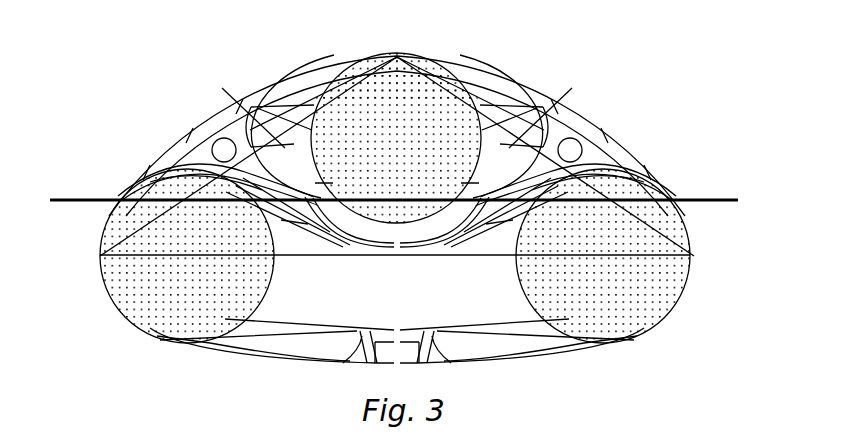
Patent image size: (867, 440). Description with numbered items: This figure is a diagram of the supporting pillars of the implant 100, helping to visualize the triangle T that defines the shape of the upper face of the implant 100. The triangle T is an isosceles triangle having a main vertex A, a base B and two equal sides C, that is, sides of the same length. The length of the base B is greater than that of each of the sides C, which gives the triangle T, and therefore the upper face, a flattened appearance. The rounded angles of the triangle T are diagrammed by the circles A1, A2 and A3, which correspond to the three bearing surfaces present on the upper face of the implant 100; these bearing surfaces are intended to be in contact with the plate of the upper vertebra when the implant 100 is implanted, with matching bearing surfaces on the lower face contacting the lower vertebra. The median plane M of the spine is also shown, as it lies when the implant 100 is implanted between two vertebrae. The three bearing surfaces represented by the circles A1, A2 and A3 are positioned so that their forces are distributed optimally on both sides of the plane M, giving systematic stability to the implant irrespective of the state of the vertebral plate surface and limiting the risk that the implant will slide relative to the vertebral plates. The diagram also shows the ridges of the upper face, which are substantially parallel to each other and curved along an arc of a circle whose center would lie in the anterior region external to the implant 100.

The implant 100 is at (657, 101).
The main vertex A is at (395, 57).
The circle A1 is at (402, 108).
The circle A2 is at (157, 285).
The circle A3 is at (638, 290).
The base B is at (218, 257).
The equal sides C is at (258, 103).
The median plane M is at (702, 200).
The triangle T is at (330, 83).